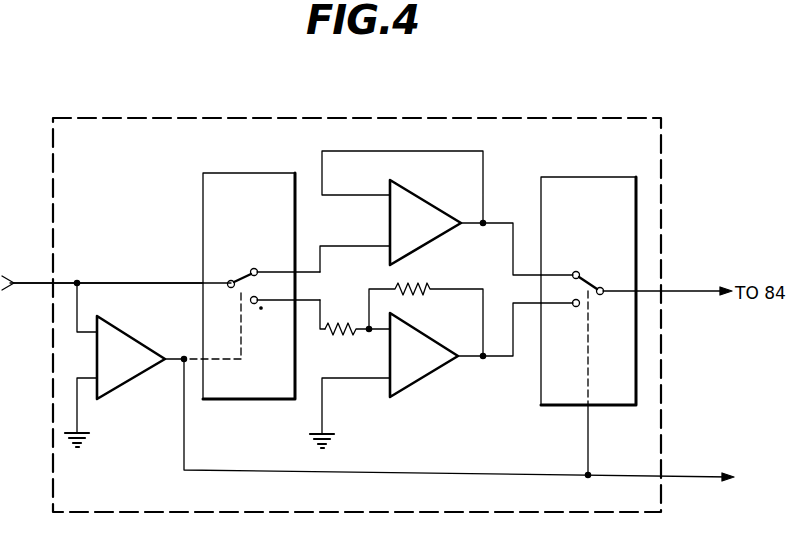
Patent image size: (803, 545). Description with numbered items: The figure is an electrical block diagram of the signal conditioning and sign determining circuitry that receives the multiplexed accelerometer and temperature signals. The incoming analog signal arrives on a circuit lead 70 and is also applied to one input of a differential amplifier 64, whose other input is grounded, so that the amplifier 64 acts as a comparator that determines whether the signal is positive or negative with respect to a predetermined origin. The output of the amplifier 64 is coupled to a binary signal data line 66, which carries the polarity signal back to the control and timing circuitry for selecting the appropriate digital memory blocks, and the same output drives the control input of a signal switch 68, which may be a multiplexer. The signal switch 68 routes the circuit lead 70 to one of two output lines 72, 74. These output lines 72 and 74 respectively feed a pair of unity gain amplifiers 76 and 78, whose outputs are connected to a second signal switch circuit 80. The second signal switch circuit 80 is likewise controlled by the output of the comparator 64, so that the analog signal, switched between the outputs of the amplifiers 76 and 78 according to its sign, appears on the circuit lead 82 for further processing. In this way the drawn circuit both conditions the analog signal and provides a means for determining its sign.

The differential amplifier 64 is at (135, 330).
The binary signal data line 66 is at (410, 447).
The signal switch 68 is at (262, 180).
The circuit lead 70 is at (134, 282).
The output line 72 is at (353, 246).
The output line 74 is at (312, 300).
The unity gain amplifier 76 is at (427, 212).
The unity gain amplifier 78 is at (428, 364).
The second signal switch circuit 80 is at (587, 185).
The circuit lead 82 is at (676, 290).